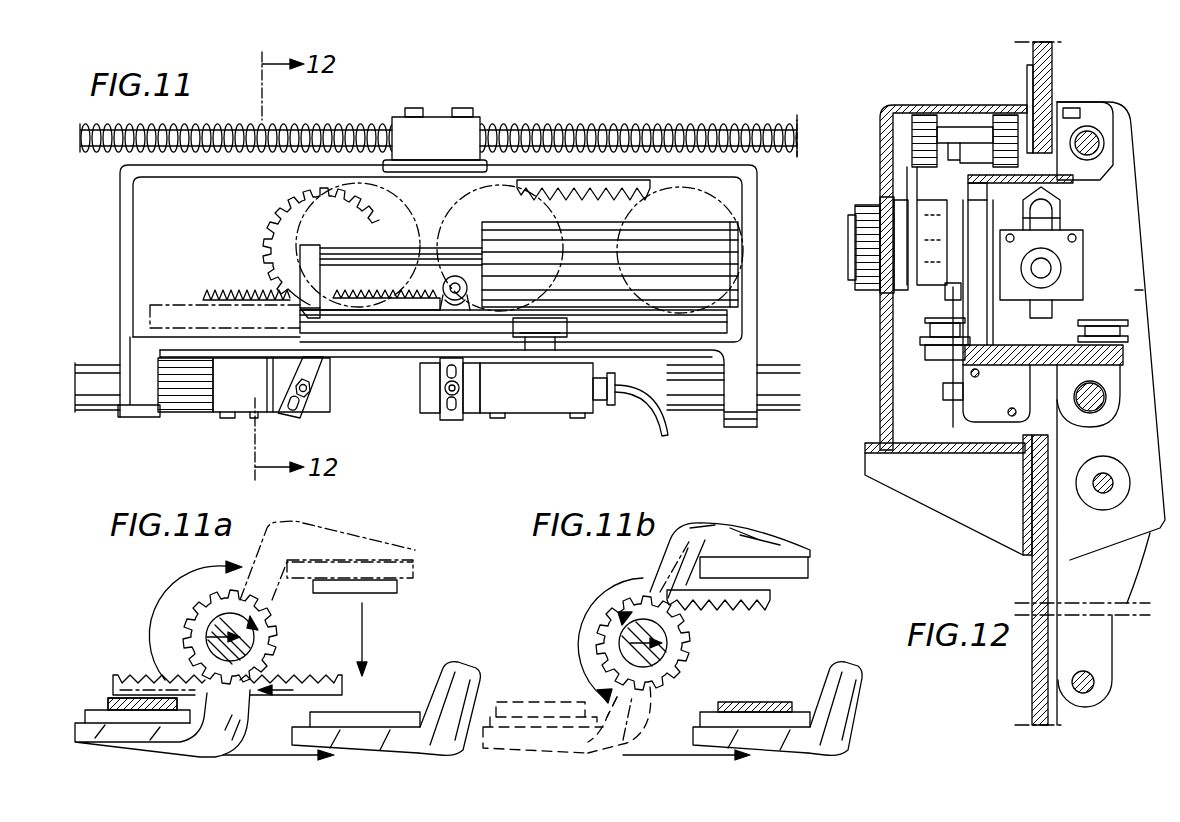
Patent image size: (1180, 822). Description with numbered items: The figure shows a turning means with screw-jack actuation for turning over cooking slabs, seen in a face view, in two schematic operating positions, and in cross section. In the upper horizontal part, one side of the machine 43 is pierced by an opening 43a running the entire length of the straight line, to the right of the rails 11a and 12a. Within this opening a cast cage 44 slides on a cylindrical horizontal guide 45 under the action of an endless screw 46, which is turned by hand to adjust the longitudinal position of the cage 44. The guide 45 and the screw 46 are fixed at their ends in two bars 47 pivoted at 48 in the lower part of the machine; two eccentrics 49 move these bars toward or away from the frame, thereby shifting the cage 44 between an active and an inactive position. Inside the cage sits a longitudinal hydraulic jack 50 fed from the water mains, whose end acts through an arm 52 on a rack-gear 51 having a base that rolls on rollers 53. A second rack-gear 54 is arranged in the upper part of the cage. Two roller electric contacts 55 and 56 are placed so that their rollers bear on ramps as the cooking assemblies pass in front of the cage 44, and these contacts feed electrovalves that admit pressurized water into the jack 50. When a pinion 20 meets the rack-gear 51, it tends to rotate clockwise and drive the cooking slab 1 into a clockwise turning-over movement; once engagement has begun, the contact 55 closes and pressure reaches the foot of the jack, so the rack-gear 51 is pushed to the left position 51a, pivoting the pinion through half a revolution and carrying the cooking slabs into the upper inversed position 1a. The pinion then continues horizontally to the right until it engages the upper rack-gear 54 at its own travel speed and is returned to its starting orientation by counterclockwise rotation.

In FIG. 11A, the cooking slab 1 is at (120, 733).
In FIG. 11B, the cooking slab 1 is at (560, 740).
In FIG. 11A, the upper inversed position 1a is at (413, 570).
In FIG. 11B, the upper inversed position 1a is at (782, 568).
In FIG. 12, the rail 11a is at (920, 338).
In FIG. 12, the rail 12a is at (890, 107).
In FIG. 11, the pinion 20 is at (277, 212).
In FIG. 11A, the pinion 20 is at (240, 643).
In FIG. 11B, the pinion 20 is at (665, 646).
In FIG. 12, the side of the machine 43 is at (1032, 564).
In FIG. 12, the opening 43a is at (1043, 393).
In FIG. 11, the cast cage 44 is at (757, 323).
In FIG. 12, the cast cage 44 is at (1075, 181).
In FIG. 11, the cylindrical horizontal guide 45 is at (773, 395).
In FIG. 12, the cylindrical horizontal guide 45 is at (1107, 399).
In FIG. 11, the endless screw 46 is at (718, 133).
In FIG. 12, the endless screw 46 is at (1090, 135).
In FIG. 12, the bar 47 is at (1097, 580).
In FIG. 12, the pivot 48 is at (1095, 678).
In FIG. 12, the eccentric 49 is at (1103, 483).
In FIG. 12, the hydraulic jack 50 is at (1067, 253).
In FIG. 11, the rack-gear 51 is at (372, 302).
In FIG. 11A, the rack-gear 51 is at (310, 684).
In FIG. 12, the rack-gear 51 is at (1123, 343).
In FIG. 11, the left position of the rack-gear 51a is at (213, 312).
In FIG. 11A, the left position of the rack-gear 51a is at (157, 693).
In FIG. 11, the arm 52 is at (308, 262).
In FIG. 12, the arm 52 is at (1055, 290).
In FIG. 11, the roller 53 is at (540, 322).
In FIG. 12, the roller 53 is at (1125, 330).
In FIG. 11, the second rack-gear 54 is at (592, 192).
In FIG. 11B, the second rack-gear 54 is at (743, 612).
In FIG. 12, the second rack-gear 54 is at (880, 213).
In FIG. 11, the roller electric contact 55 is at (317, 400).
In FIG. 11, the roller electric contact 56 is at (452, 299).